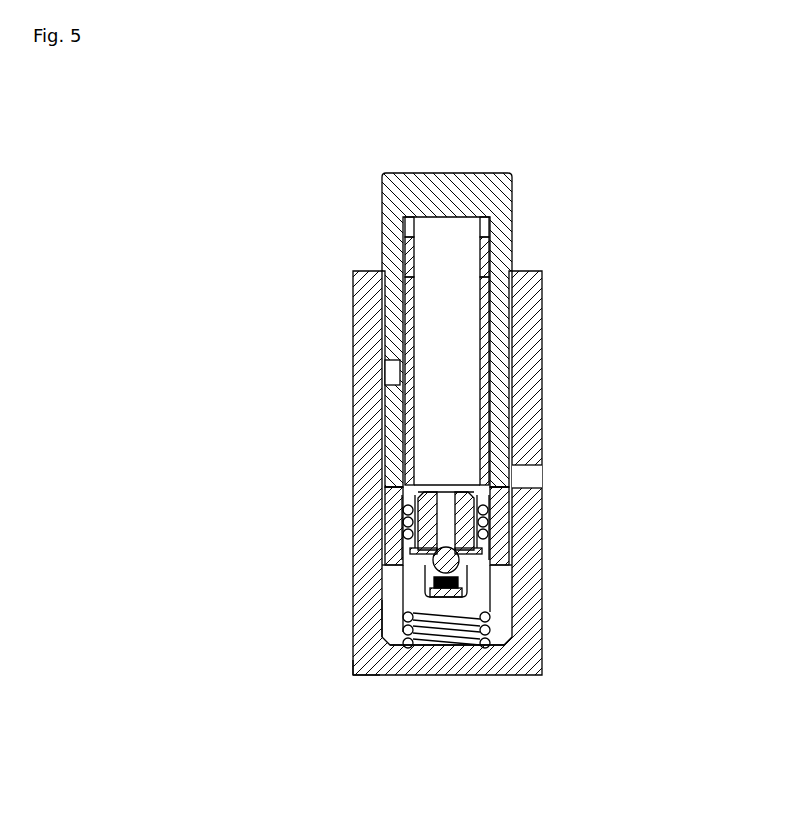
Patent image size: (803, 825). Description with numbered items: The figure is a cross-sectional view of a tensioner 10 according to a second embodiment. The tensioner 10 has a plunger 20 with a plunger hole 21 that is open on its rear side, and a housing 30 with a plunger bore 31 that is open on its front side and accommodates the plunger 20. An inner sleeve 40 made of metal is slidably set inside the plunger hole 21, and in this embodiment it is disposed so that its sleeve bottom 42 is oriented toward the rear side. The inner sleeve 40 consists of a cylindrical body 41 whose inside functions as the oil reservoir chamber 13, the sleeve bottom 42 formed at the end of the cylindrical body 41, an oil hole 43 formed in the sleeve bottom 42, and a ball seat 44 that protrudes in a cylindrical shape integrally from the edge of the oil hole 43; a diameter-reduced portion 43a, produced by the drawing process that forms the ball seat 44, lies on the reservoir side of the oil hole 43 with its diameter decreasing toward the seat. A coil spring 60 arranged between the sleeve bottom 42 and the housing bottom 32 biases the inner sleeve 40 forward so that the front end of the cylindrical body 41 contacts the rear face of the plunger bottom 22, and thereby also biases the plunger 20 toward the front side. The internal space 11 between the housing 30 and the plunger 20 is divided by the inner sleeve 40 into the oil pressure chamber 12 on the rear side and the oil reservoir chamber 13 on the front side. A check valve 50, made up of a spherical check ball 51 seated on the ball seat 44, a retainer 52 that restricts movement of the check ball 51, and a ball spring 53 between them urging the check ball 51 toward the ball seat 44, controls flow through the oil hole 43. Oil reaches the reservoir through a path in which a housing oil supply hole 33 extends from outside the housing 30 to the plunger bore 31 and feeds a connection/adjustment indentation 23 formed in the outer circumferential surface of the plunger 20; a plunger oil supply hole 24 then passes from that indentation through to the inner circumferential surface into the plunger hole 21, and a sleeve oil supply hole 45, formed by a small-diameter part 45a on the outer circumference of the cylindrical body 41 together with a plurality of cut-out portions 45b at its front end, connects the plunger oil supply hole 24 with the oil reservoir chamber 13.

The tensioner 10 is at (188, 145).
The internal space 11 is at (218, 528).
The oil pressure chamber 12 is at (423, 605).
The oil reservoir chamber 13 is at (405, 497).
The plunger 20 is at (380, 205).
The plunger hole 21 is at (430, 470).
The plunger bottom 22 is at (452, 200).
The connection/adjustment indentation 23 is at (380, 432).
The plunger oil supply hole 24 is at (388, 375).
The housing 30 is at (356, 677).
The plunger bore 31 is at (393, 627).
The housing bottom 32 is at (443, 663).
The housing oil supply hole 33 is at (530, 470).
The inner sleeve 40 is at (490, 315).
The cylindrical body 41 is at (488, 375).
The sleeve bottom 42 is at (462, 500).
The oil hole 43 is at (470, 522).
The diameter-reduced portion 43a is at (455, 490).
The ball seat 44 is at (470, 548).
The sleeve oil supply hole 45 is at (678, 177).
The small-diameter part 45a is at (490, 250).
The cut-out portions 45b is at (486, 212).
The check valve 50 is at (668, 587).
The check ball 51 is at (452, 575).
The retainer 52 is at (440, 582).
The ball spring 53 is at (420, 603).
The coil spring 60 is at (484, 648).